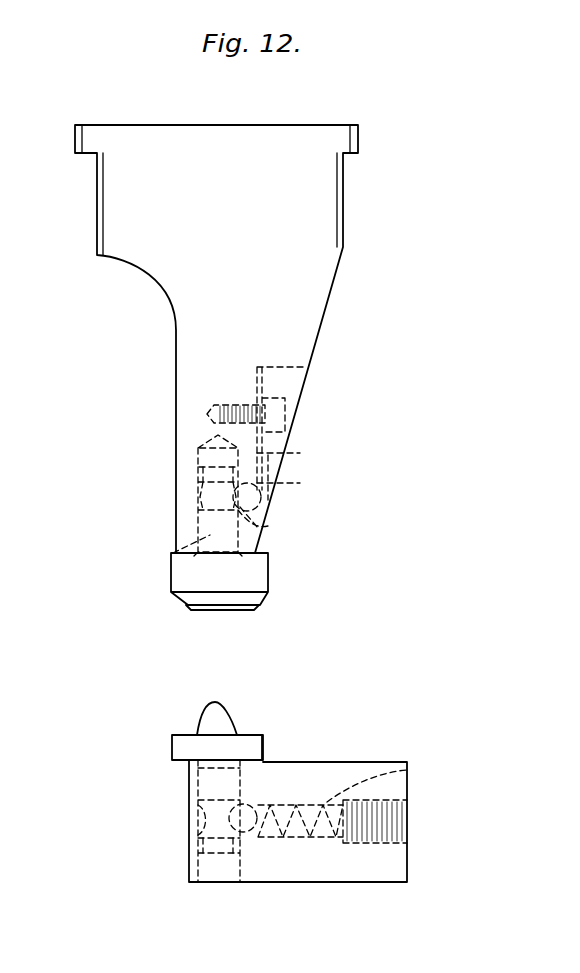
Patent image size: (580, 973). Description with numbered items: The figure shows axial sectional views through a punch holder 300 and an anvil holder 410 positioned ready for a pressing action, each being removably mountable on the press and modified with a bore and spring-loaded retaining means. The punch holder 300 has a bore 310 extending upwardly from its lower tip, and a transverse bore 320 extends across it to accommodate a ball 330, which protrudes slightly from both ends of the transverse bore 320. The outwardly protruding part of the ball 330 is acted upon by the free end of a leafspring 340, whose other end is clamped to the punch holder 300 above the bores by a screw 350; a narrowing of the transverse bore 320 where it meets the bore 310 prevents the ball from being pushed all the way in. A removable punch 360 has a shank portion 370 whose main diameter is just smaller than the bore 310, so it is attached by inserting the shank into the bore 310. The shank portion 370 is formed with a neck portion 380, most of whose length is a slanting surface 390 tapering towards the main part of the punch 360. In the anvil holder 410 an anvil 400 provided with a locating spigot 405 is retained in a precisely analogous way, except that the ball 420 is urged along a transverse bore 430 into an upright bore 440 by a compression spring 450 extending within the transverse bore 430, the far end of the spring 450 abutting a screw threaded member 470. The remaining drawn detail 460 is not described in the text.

The punch holder 300 is at (303, 293).
The bore 310 is at (198, 513).
The transverse bore 320 is at (258, 528).
The ball 330 is at (261, 497).
The leafspring 340 is at (300, 453).
The screw 350 is at (285, 412).
The punch 360 is at (252, 578).
The shank portion 370 is at (170, 556).
The neck portion 380 is at (200, 498).
The slanting surface 390 is at (193, 458).
The anvil 400 is at (182, 748).
The locating spigot 405 is at (223, 715).
The anvil holder 410 is at (320, 778).
The ball 420 is at (250, 838).
The transverse bore 430 is at (305, 838).
The upright bore 440 is at (197, 812).
The compression spring 450 is at (407, 770).
The inlet 460 is at (197, 843).
The screw threaded member 470 is at (407, 841).